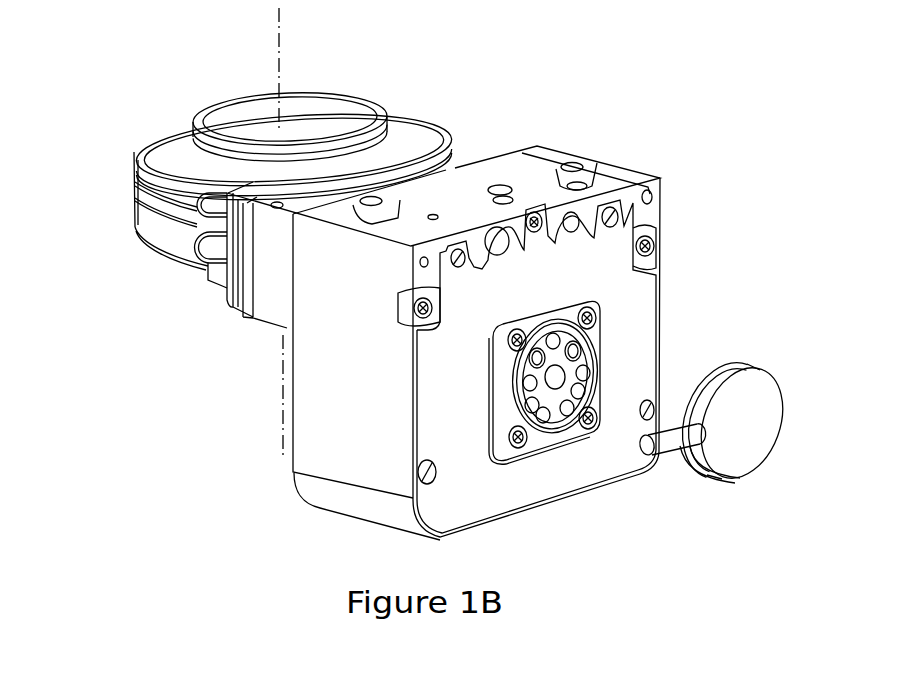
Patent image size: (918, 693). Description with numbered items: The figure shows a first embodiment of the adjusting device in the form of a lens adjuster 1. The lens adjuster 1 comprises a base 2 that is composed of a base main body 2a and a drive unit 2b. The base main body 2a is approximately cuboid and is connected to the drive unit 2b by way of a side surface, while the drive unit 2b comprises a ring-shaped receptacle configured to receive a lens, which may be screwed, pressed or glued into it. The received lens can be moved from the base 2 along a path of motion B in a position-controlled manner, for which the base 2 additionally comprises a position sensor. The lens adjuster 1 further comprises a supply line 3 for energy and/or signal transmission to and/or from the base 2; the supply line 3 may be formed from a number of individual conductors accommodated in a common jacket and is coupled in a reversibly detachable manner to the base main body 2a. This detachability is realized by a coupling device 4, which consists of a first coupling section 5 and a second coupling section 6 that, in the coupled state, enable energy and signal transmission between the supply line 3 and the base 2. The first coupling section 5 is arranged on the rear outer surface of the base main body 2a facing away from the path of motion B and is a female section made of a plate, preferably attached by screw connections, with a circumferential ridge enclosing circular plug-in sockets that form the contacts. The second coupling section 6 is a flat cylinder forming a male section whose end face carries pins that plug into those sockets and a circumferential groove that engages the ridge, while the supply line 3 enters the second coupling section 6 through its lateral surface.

The lens adjuster 1 is at (99, 112).
The base 2 is at (622, 21).
The base main body 2a is at (498, 200).
The drive unit 2b is at (452, 141).
The supply line 3 is at (682, 453).
The coupling device 4 is at (833, 340).
The first coupling section 5 is at (592, 313).
The second coupling section 6 is at (743, 390).
The path of motion B is at (282, 44).